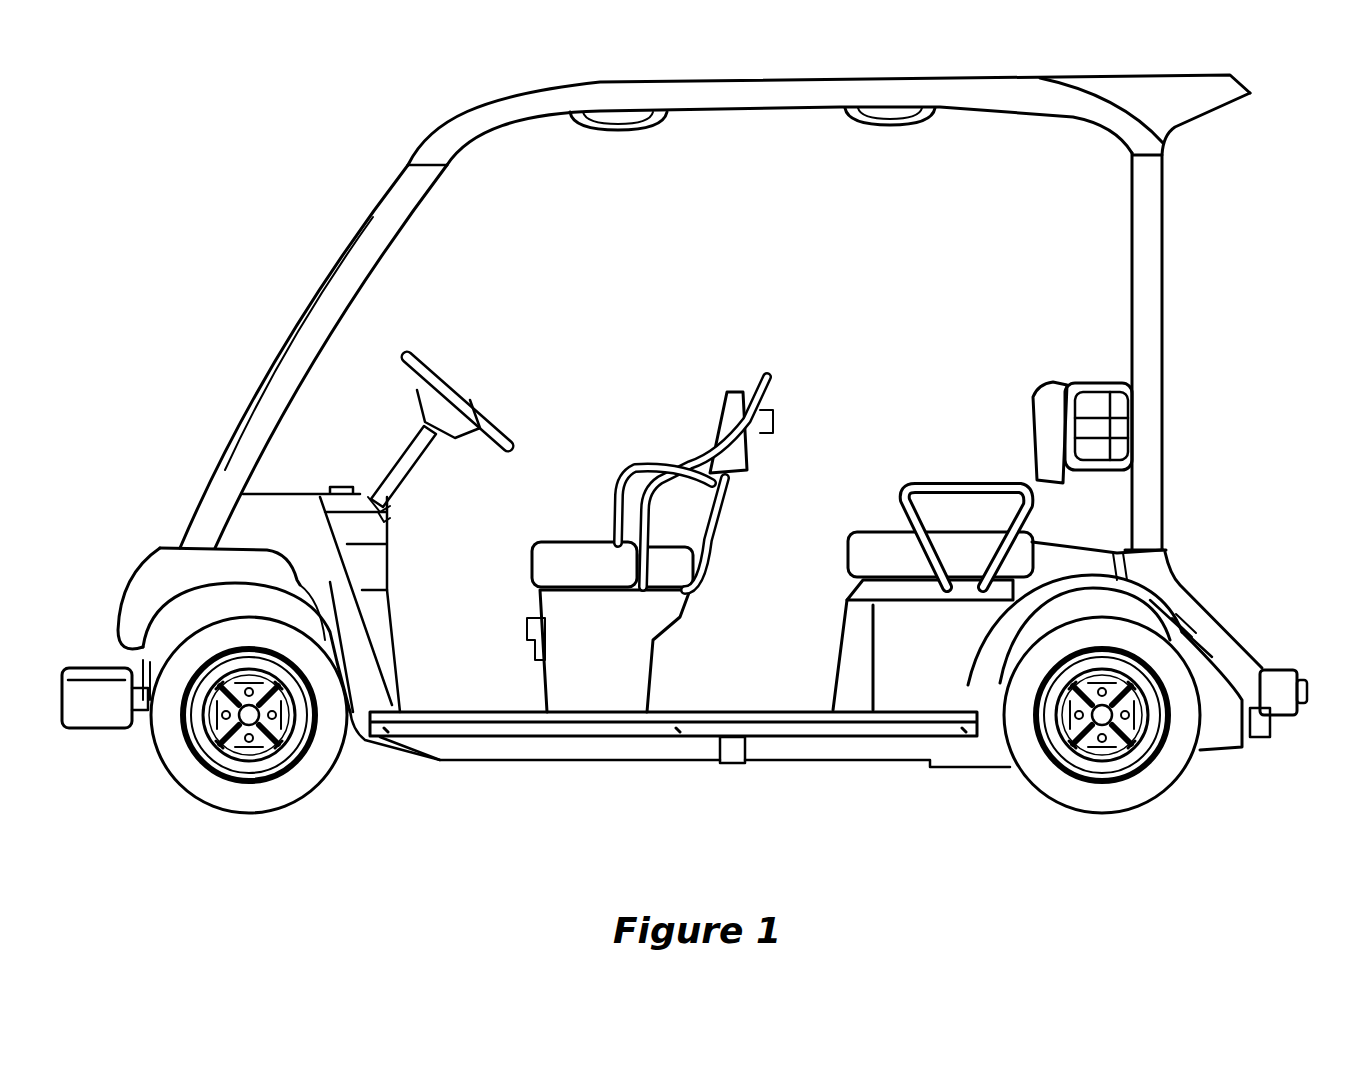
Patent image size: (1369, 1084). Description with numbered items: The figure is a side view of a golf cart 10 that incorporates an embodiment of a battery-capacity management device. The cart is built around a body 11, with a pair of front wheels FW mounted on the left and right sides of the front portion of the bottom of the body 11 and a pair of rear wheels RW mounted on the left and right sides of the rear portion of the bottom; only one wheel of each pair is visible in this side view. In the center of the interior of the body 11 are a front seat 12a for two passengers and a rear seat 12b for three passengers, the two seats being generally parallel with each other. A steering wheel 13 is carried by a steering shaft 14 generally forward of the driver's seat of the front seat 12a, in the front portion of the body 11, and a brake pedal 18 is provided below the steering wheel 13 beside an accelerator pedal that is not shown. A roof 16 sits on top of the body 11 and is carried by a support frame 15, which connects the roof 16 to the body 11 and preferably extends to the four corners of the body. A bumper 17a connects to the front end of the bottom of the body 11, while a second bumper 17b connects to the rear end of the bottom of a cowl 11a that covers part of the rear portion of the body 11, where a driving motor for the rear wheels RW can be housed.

The golf cart 10 is at (1286, 90).
The body 11 is at (160, 580).
The cowl 11a is at (1200, 615).
The front seat 12a is at (567, 548).
The rear seat 12b is at (867, 538).
The steering wheel 13 is at (428, 371).
The steering shaft 14 is at (397, 460).
The support frame 15 is at (1140, 248).
The roof 16 is at (873, 76).
The bumper 17a is at (84, 712).
The bumper 17b is at (1297, 704).
The brake pedal 18 is at (410, 667).
The front wheels FW is at (258, 812).
The rear wheels RW is at (1103, 812).